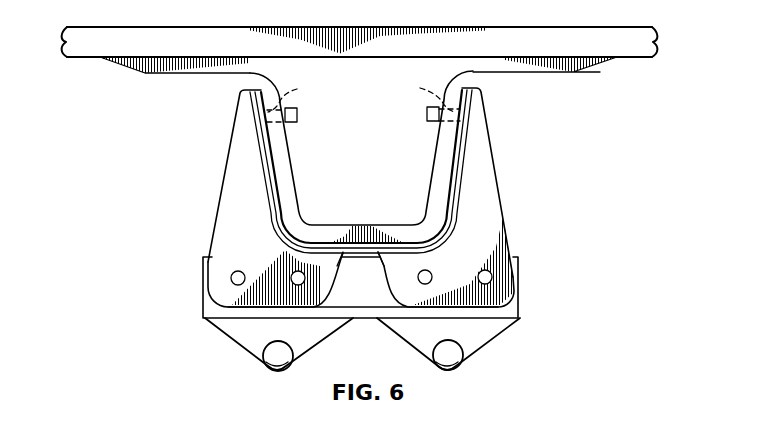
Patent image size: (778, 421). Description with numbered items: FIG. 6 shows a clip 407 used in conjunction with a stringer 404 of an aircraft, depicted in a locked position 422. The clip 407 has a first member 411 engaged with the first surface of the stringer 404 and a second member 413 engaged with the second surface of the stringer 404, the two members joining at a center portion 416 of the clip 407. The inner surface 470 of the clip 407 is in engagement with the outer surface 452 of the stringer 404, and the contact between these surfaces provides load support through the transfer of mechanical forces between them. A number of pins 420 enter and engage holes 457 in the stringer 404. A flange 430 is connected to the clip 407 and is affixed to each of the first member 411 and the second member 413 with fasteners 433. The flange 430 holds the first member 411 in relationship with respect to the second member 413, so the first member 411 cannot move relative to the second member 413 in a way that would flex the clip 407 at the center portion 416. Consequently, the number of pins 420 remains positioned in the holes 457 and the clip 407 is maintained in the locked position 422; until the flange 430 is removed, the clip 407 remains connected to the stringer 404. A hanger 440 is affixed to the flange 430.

The stringer 404 is at (433, 162).
The clip 407 is at (228, 134).
The first member 411 is at (226, 188).
The second member 413 is at (492, 184).
The center portion 416 is at (364, 258).
The number of pins 420 is at (297, 114).
The locked position 422 is at (540, 224).
The flange 430 is at (210, 305).
The fastener 433 is at (239, 271).
The hanger 440 is at (237, 343).
The outer surface 452 is at (270, 196).
The holes 457 is at (361, 92).
The inner surface 470 is at (322, 240).